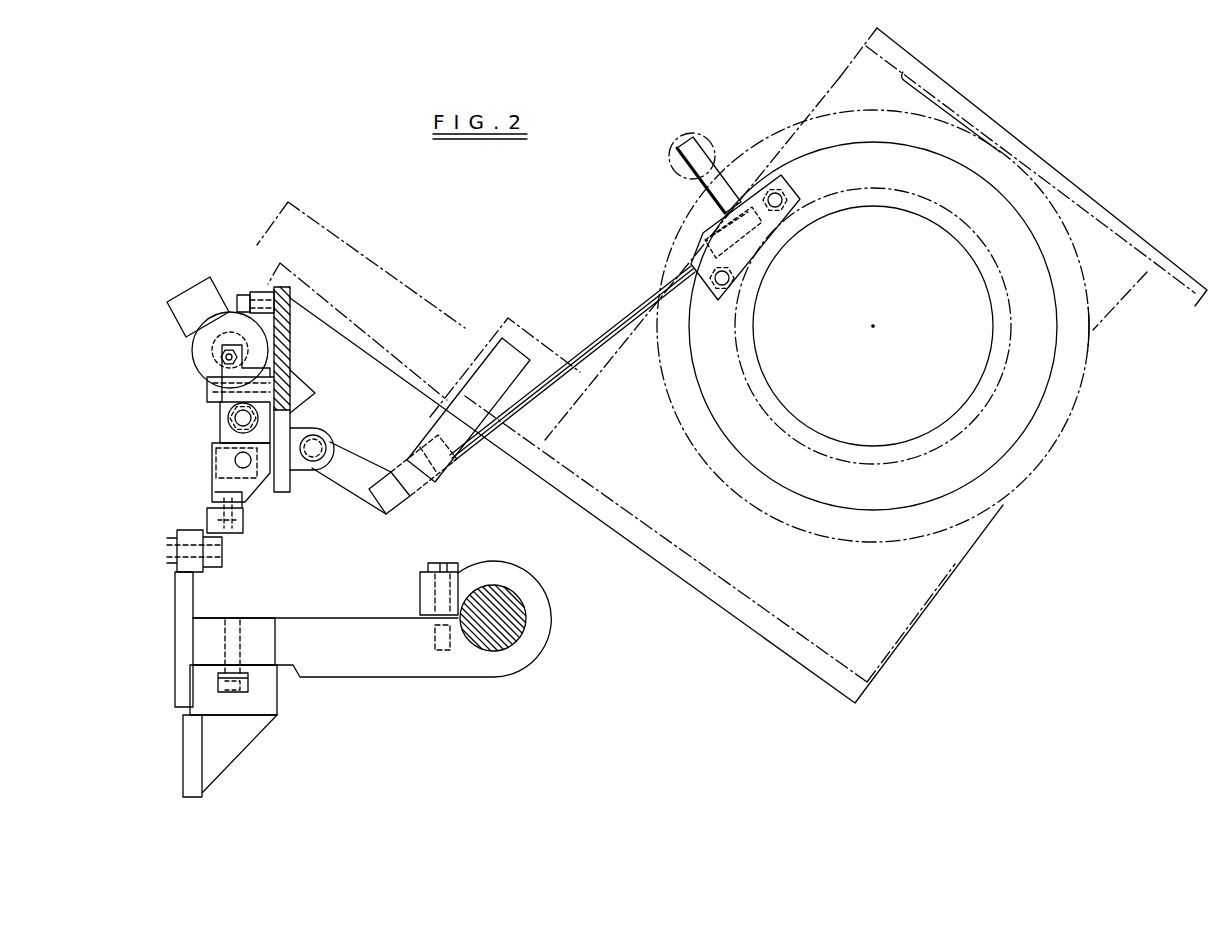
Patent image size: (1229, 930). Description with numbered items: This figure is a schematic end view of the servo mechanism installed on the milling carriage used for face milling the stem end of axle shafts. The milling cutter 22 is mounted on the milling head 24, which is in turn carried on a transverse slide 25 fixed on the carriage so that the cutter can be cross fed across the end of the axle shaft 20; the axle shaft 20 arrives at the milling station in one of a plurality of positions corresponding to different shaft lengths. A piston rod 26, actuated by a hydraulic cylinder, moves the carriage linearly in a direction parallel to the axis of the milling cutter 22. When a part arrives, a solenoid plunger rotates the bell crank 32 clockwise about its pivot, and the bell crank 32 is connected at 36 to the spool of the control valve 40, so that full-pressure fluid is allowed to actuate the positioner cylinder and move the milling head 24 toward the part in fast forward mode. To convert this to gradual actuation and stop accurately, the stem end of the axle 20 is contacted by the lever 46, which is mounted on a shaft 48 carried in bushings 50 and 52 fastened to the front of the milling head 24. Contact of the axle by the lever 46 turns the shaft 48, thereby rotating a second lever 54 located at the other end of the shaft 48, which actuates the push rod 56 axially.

The axle shaft 20 is at (716, 130).
The milling cutter 22 is at (968, 393).
The milling head 24 is at (1097, 312).
The transverse slide 25 is at (800, 634).
The piston rod 26 is at (527, 635).
The bell crank 32 is at (218, 392).
The connection of bell crank to valve spool 36 is at (223, 358).
The control valve 40 is at (217, 286).
The lever 46 is at (716, 193).
The shaft 48 is at (561, 378).
The bushing 50 is at (455, 466).
The bushing 52 is at (712, 233).
The second lever 54 is at (352, 470).
The push rod 56 is at (318, 440).